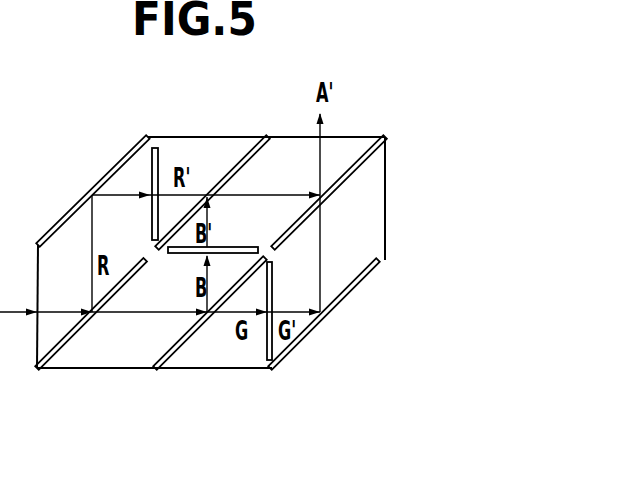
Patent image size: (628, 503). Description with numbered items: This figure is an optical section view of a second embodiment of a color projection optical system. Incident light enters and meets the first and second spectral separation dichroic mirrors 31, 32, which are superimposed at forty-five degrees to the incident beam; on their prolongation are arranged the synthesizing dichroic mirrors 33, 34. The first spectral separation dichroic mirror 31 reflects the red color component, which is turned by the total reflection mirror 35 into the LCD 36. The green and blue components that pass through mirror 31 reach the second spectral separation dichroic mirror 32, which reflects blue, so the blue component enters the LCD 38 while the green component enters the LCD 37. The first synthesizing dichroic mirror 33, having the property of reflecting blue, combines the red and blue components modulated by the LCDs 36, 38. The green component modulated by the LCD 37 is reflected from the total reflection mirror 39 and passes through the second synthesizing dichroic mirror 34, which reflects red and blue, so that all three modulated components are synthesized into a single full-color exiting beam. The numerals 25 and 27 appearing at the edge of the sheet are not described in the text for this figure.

The first spectral separation dichroic mirror 31 is at (66, 350).
The second spectral separation dichroic mirror 32 is at (187, 342).
The first synthesizing dichroic mirror 33 is at (247, 158).
The second synthesizing dichroic mirror 34 is at (359, 160).
The total reflection mirror 35 is at (68, 216).
The LCD 36 is at (162, 150).
The LCD 37 is at (264, 352).
The LCD 38 is at (180, 253).
The total reflection mirror 39 is at (305, 343).
The light source (adjacent figure, clipped) 25 is at (8, 45).
The light source (adjacent figure, clipped) 27 is at (8, 99).